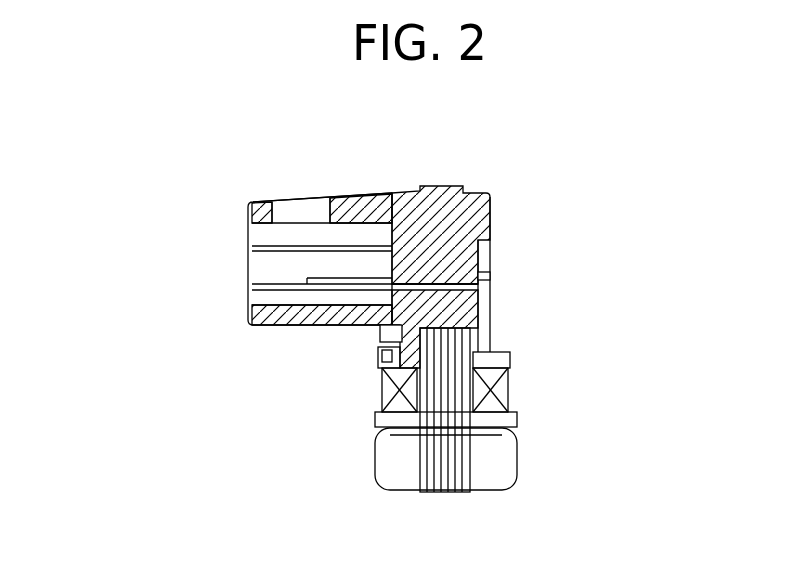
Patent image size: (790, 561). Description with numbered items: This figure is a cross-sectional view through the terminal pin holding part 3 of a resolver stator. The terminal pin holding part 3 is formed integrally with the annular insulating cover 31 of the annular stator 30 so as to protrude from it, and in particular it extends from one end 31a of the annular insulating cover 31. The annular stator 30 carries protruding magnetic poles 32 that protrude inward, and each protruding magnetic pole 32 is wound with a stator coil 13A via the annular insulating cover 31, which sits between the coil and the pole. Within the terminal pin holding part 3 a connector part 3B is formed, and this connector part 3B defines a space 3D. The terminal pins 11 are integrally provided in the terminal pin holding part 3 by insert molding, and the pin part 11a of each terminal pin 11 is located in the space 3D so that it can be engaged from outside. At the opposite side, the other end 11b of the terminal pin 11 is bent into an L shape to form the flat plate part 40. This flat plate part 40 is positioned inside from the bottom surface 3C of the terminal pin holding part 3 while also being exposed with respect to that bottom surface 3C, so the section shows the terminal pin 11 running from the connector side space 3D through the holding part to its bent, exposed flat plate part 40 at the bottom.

The terminal pin holding part 3 is at (490, 225).
The connector part 3B is at (347, 193).
The bottom surface 3C is at (490, 303).
The space 3D is at (258, 270).
The terminal pin 11 is at (400, 333).
The pin part 11a is at (343, 278).
The other end 11b is at (437, 272).
The stator coil 13A is at (510, 388).
The annular stator 30 is at (490, 338).
The annular insulating cover 31 is at (375, 352).
The one end 31a is at (400, 344).
The protruding magnetic pole 32 is at (460, 468).
The flat plate part 40 is at (490, 278).